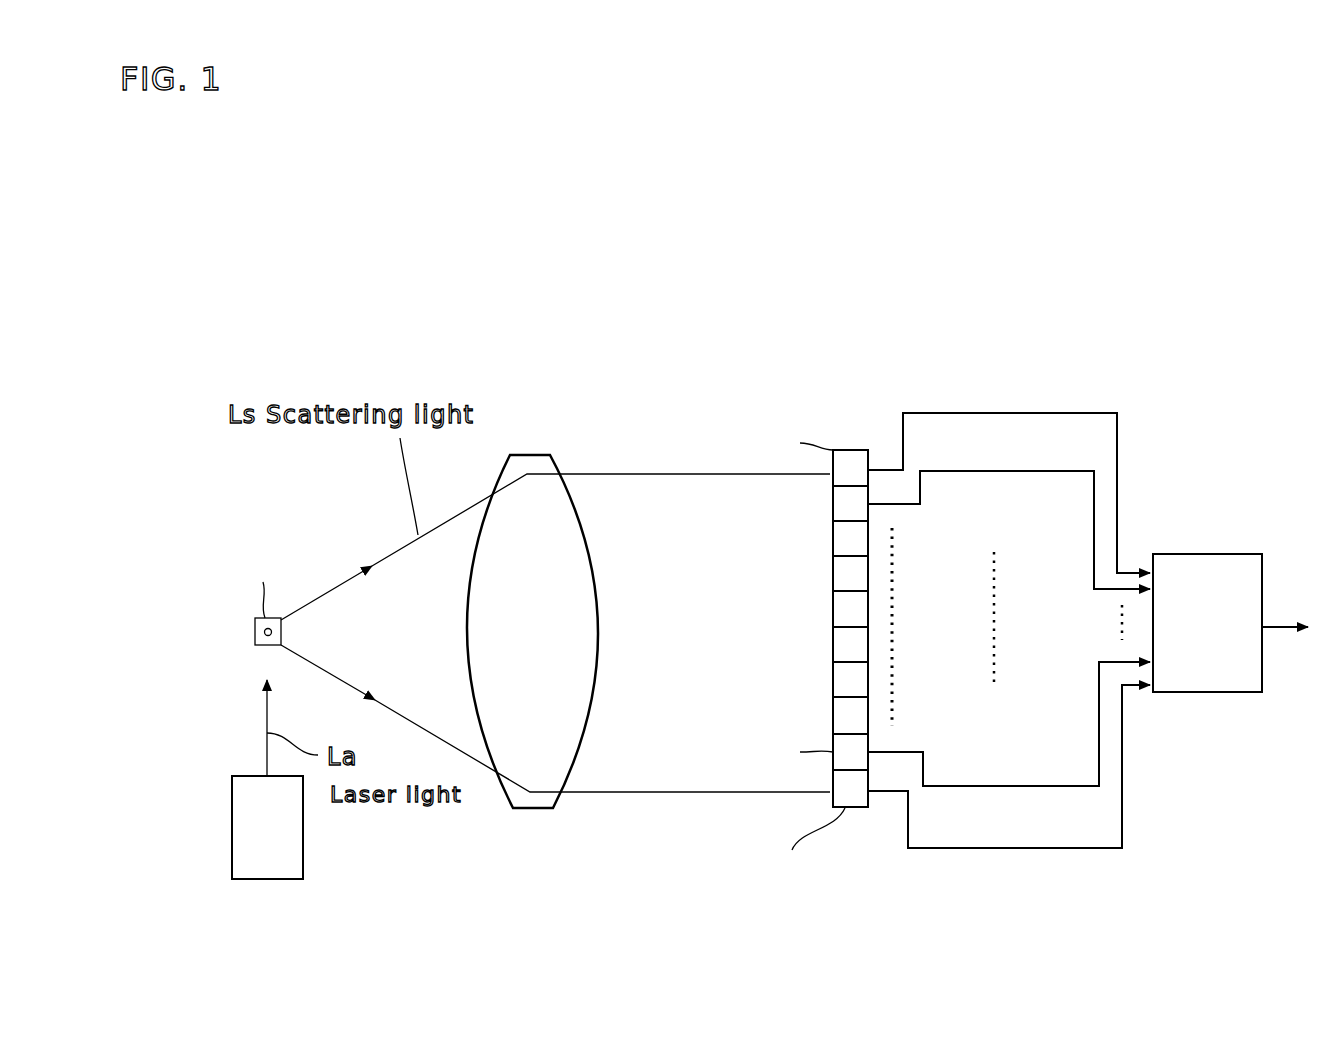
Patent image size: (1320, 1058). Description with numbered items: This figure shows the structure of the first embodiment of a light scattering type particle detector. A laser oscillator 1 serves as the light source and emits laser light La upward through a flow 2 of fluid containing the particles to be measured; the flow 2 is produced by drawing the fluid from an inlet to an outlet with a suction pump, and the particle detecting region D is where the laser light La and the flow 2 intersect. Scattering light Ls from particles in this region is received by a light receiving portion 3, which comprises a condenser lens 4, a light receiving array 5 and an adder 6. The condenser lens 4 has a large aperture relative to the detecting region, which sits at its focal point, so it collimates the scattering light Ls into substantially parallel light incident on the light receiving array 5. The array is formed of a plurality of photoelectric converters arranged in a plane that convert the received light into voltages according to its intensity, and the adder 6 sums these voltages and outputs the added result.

The laser oscillator 1 is at (303, 860).
The flow 2 is at (255, 632).
The light receiving portion 3 is at (1140, 285).
The condenser lens 4 is at (553, 457).
The light receiving array 5 is at (851, 447).
The adder 6 is at (1215, 553).